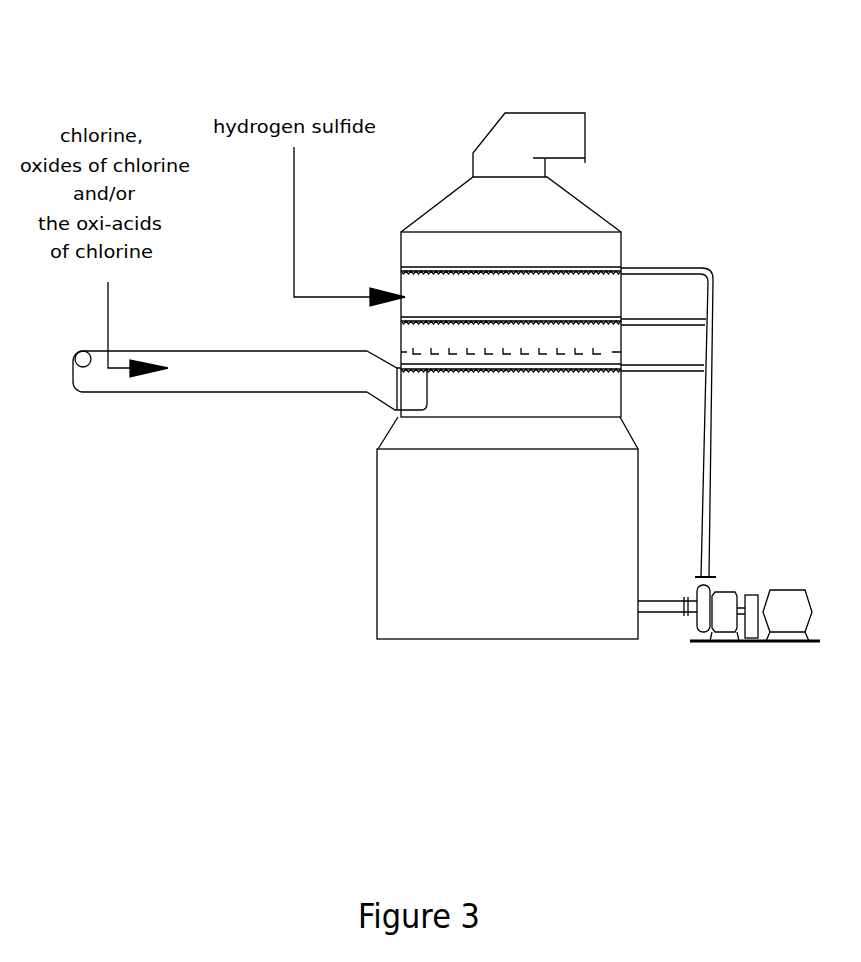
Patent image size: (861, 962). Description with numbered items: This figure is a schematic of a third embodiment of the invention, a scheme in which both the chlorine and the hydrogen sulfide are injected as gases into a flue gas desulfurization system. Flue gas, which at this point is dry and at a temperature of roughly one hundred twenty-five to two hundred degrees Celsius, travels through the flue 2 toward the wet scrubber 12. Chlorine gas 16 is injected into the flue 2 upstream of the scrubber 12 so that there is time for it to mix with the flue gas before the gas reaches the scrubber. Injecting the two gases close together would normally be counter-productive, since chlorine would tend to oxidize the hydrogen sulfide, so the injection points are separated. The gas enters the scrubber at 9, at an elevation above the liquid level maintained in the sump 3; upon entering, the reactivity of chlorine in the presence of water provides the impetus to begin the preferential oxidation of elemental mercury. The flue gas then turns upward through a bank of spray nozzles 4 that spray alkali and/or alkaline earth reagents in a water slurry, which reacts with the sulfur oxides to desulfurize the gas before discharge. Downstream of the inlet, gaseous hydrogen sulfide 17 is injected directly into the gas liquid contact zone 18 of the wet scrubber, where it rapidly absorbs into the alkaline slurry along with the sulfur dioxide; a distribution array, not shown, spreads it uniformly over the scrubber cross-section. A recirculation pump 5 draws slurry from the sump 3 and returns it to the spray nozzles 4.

The flue 2 is at (260, 370).
The sump 3 is at (507, 528).
The bank of spray nozzles 4 is at (670, 363).
The recirculation pump 5 is at (780, 646).
The scrubber inlet 9 is at (407, 392).
The wet scrubber 12 is at (508, 250).
The chlorine gas 16 is at (138, 328).
The gaseous H2S 17 is at (349, 226).
The gas liquid contact zone 18 is at (511, 324).